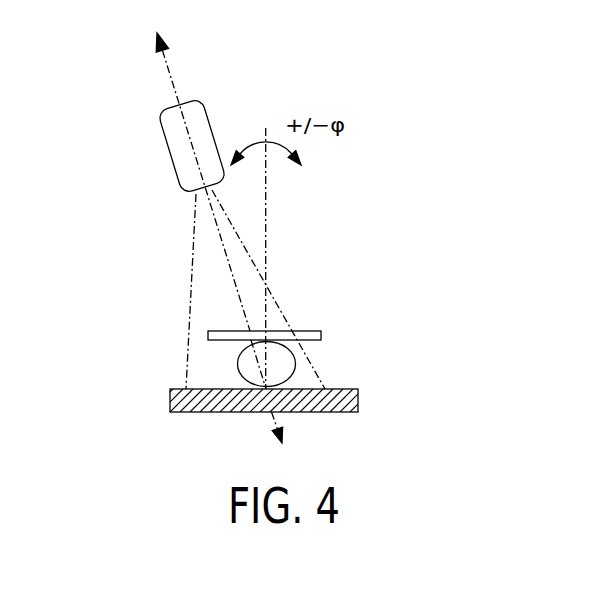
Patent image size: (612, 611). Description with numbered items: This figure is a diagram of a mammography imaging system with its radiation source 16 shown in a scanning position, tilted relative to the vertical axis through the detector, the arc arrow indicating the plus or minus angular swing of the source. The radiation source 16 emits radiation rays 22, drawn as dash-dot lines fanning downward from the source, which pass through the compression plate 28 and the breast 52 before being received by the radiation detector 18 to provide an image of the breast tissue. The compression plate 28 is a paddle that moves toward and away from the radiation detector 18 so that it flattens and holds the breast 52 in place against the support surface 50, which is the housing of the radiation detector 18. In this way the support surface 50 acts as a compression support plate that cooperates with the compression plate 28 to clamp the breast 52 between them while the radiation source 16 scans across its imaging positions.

The radiation source 16 is at (168, 154).
The radiation rays 22 is at (190, 290).
The compression plate 28 is at (321, 335).
The breast 52 is at (288, 362).
The support surface 50 is at (358, 397).
The radiation detector 18 is at (310, 412).